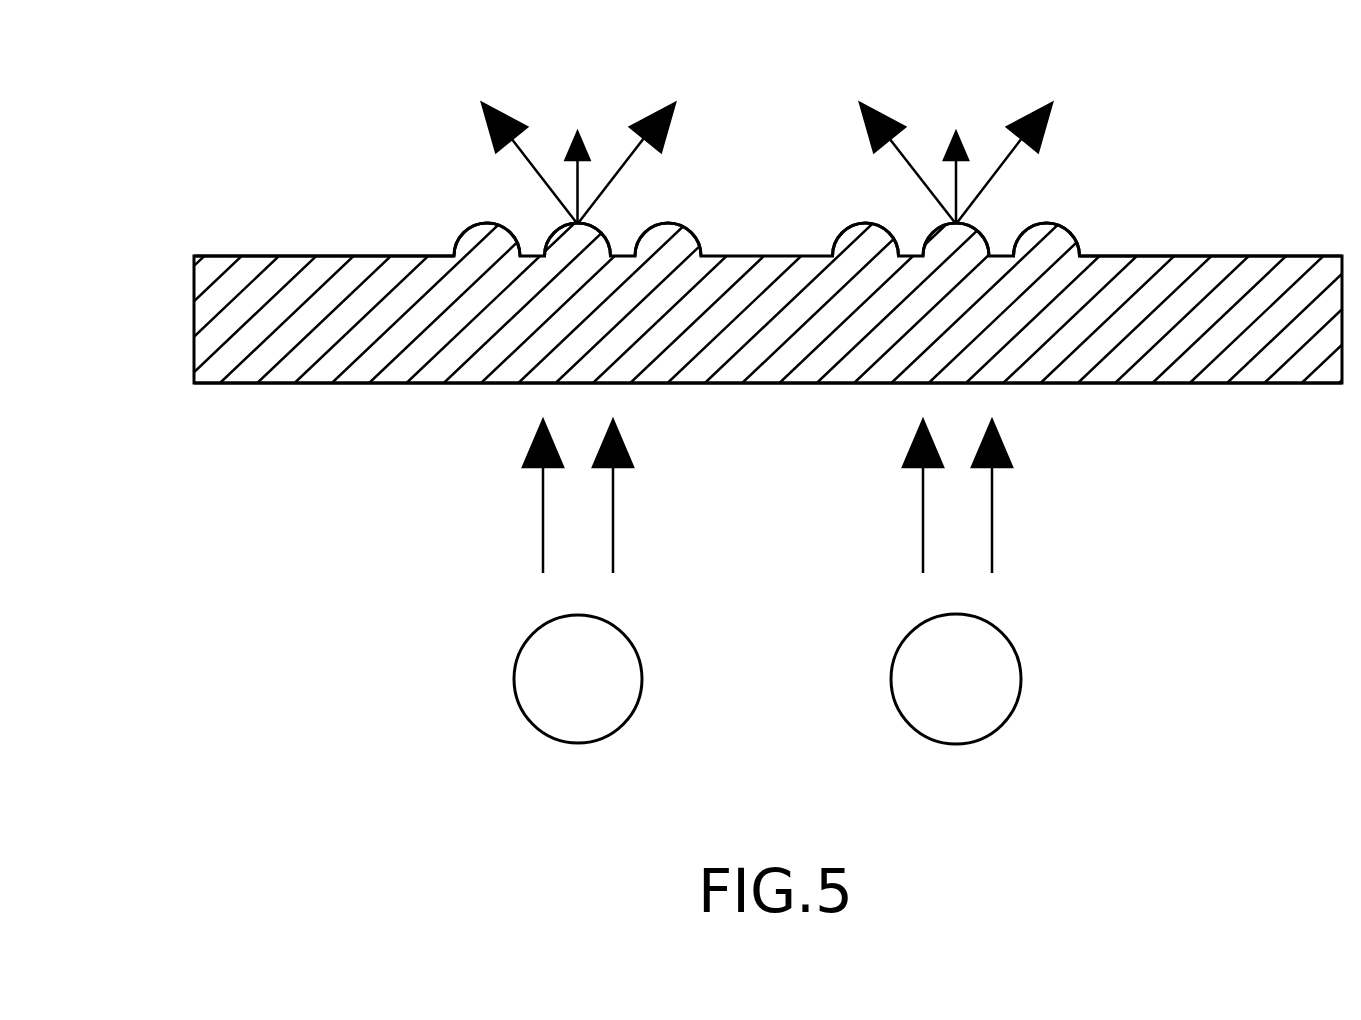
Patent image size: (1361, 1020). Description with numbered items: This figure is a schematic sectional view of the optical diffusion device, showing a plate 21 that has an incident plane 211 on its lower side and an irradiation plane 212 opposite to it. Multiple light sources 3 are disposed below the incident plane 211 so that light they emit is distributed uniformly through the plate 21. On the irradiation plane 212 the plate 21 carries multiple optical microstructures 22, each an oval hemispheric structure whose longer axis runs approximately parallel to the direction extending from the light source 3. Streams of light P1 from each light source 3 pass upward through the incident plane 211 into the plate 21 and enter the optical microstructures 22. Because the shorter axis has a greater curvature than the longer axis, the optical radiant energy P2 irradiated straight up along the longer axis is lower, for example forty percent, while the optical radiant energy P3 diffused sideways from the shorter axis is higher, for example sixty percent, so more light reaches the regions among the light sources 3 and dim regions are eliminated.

The plate 21 is at (335, 362).
The optical microstructure 22 is at (510, 248).
The incident plane 211 is at (1240, 383).
The irradiation plane 212 is at (1250, 256).
The light source 3 is at (548, 671).
The streams of light P1 is at (752, 496).
The optical radiant energy irradiated from the longer axis P2 is at (769, 149).
The optical radiant energy irradiated from the shorter axis P3 is at (773, 163).